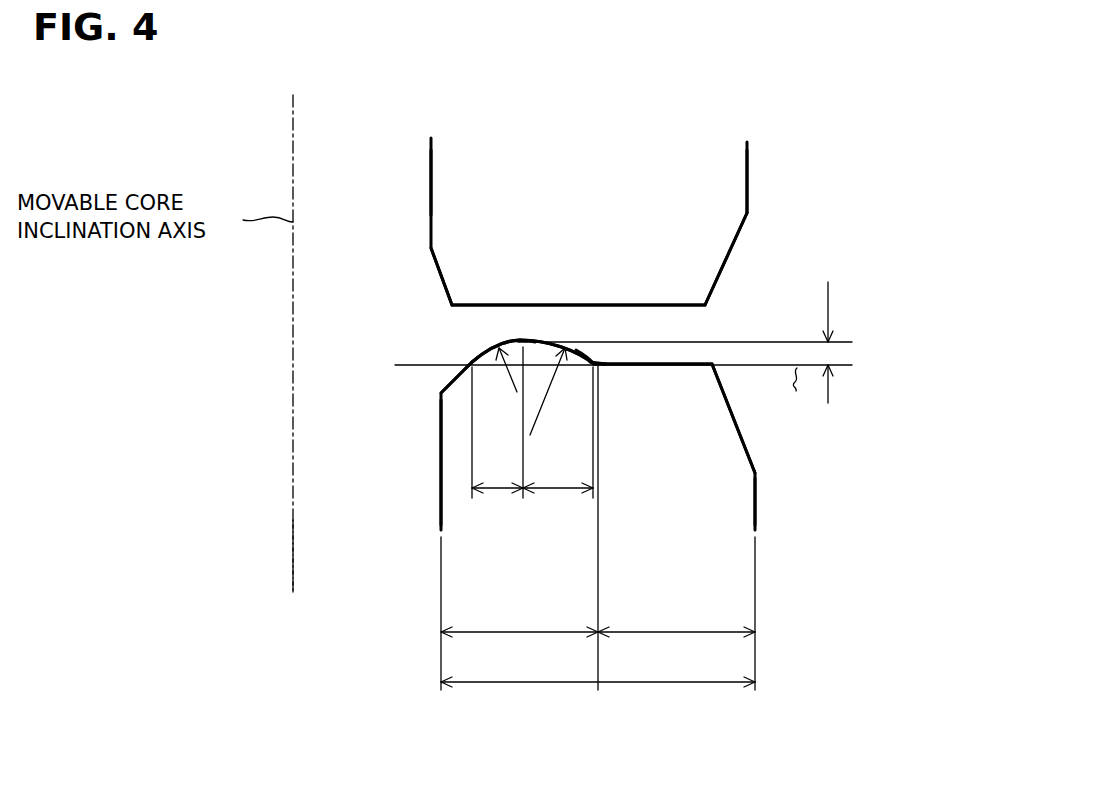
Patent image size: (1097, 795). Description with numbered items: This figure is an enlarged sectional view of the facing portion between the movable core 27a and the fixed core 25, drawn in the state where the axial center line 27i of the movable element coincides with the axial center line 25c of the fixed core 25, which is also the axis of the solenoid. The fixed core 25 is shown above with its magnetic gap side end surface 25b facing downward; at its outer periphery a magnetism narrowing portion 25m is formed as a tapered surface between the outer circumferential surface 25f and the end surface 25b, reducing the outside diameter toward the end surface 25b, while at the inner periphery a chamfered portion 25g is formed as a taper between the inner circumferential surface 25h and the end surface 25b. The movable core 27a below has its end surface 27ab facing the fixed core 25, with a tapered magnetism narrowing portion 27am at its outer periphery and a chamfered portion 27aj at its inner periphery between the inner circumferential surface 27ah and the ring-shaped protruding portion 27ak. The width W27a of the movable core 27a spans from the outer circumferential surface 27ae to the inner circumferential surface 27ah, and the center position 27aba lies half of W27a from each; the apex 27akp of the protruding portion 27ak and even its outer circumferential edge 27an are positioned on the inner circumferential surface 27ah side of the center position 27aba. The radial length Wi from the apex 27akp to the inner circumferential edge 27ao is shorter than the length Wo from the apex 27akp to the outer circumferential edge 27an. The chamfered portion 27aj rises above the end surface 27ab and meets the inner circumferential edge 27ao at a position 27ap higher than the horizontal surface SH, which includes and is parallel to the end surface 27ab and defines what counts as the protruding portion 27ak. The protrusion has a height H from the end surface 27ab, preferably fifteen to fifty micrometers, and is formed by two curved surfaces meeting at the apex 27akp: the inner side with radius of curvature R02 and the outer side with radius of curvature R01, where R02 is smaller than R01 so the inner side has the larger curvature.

The fixed core 25 is at (757, 122).
The end surface of the fixed core 25b is at (673, 308).
The axial center line of the fixed core 25c is at (348, 315).
The outer circumferential surface of the fixed core 25f is at (747, 175).
The chamfered portion of the fixed core 25g is at (432, 262).
The inner circumferential surface of the fixed core 25h is at (431, 183).
The magnetism narrowing portion of the fixed core 25m is at (738, 236).
The movable core 27a is at (773, 540).
The end surface of the movable core 27ab is at (676, 365).
The center position 27aba is at (600, 364).
The outer circumferential surface of the movable core 27ae is at (757, 497).
The inner circumferential surface of the movable core 27ah is at (441, 473).
The chamfered portion of the movable core 27aj is at (455, 379).
The protruding portion 27ak is at (575, 341).
The apex of the protruding portion 27akp is at (518, 340).
The magnetism narrowing portion of the movable core 27am is at (745, 445).
The outer circumferential edge of the protruding portion 27an is at (595, 361).
The inner circumferential edge of the protruding portion 27ao is at (470, 362).
The position where the chamfered portion meets the protruding portion 27ap is at (472, 362).
The axial center line of the movable element 27i is at (293, 563).
The height of the protruding portion H is at (837, 312).
The horizontal surface SH is at (807, 388).
The radial length between apex and inner circumferential edge Wi is at (497, 422).
The radial length between apex and outer circumferential edge Wo is at (558, 432).
The radius of curvature of the outer circumferential side R01 is at (559, 391).
The radius of curvature of the inner circumferential side R02 is at (497, 377).
The width of the movable core W27a is at (552, 602).